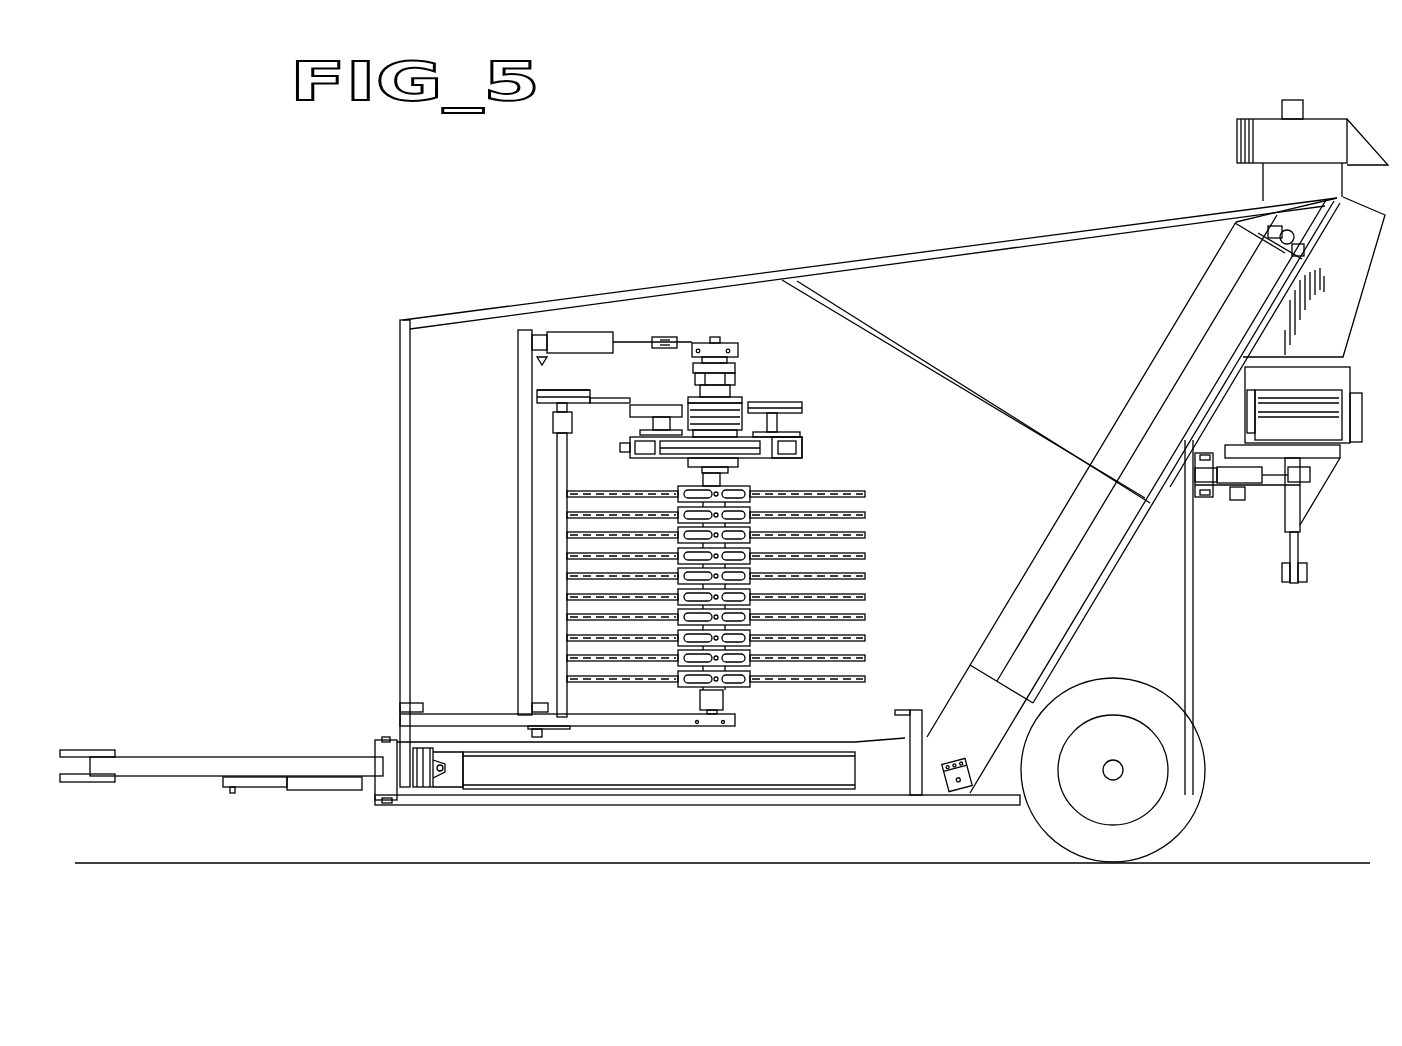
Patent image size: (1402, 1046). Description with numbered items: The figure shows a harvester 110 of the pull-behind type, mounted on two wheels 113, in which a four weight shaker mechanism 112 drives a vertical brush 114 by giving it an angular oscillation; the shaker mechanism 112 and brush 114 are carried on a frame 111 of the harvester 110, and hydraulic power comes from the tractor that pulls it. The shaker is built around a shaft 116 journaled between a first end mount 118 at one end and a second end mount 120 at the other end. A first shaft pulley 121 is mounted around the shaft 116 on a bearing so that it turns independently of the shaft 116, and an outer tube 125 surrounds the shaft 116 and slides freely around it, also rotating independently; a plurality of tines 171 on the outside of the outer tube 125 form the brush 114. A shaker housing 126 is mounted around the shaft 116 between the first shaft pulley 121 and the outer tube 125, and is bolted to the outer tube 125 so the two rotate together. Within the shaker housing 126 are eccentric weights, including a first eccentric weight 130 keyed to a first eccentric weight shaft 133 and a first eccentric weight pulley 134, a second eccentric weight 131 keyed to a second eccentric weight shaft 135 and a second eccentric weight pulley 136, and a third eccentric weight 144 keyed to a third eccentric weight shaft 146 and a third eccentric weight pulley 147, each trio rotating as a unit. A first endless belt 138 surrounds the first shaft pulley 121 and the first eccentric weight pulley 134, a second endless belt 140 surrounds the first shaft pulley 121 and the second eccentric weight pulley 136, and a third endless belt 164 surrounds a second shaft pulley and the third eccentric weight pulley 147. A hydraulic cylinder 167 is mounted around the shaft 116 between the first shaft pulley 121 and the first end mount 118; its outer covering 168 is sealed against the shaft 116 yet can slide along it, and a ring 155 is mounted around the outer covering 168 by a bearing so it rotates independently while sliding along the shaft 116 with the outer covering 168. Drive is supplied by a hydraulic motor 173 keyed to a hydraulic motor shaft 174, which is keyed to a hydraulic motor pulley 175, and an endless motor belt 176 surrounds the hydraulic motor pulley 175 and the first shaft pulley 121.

The harvester 110 is at (413, 270).
The frame 111 is at (950, 243).
The shaker mechanism 112 is at (880, 437).
The wheels 113 is at (1207, 753).
The vertical brush 114 is at (915, 512).
The shaft 116 is at (715, 337).
The first end mount 118 is at (740, 345).
The second end mount 120 is at (737, 718).
The first shaft pulley 121 is at (742, 397).
The outer tube 125 is at (725, 697).
The shaker housing 126 is at (640, 457).
The first eccentric weight 130 is at (810, 448).
The second eccentric weight 131 is at (623, 445).
The first eccentric weight shaft 133 is at (780, 423).
The first eccentric weight pulley 134 is at (792, 397).
The second eccentric weight shaft 135 is at (647, 425).
The second eccentric weight pulley 136 is at (643, 400).
The first endless belt 138 is at (803, 408).
The second endless belt 140 is at (648, 398).
The third eccentric weight 144 is at (800, 455).
The third eccentric weight shaft 146 is at (727, 467).
The third eccentric weight pulley 147 is at (683, 407).
The ring 155 is at (693, 347).
The third endless belt 164 is at (683, 402).
The hydraulic cylinder 167 is at (790, 322).
The outer covering 168 is at (735, 365).
The tines 171 is at (865, 515).
The hydraulic motor 173 is at (553, 423).
The hydraulic motor shaft 174 is at (543, 402).
The hydraulic motor pulley 175 is at (547, 393).
The endless motor belt 176 is at (540, 400).